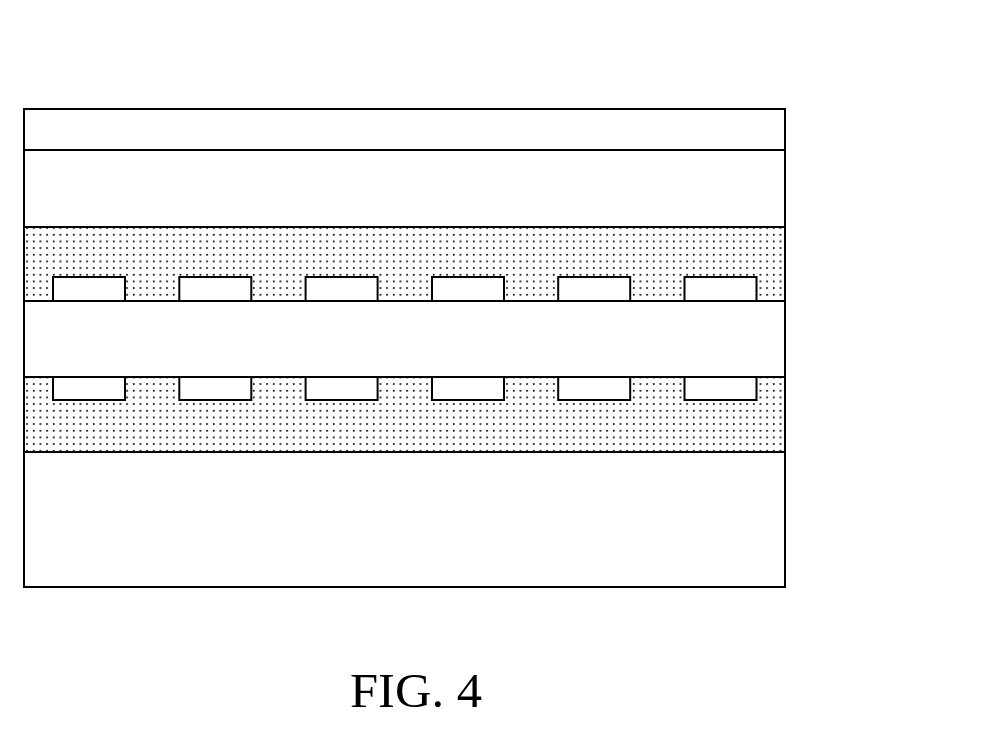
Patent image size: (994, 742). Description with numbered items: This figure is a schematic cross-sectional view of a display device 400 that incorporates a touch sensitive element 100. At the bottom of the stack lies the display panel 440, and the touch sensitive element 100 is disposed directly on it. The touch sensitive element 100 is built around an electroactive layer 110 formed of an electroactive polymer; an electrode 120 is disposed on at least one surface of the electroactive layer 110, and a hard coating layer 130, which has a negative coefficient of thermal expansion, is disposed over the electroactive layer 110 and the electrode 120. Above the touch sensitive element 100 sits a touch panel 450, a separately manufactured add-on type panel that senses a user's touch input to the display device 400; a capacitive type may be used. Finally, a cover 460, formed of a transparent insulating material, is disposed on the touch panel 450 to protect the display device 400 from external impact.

The display device 400 is at (763, 38).
The cover 460 is at (753, 133).
The touch panel 450 is at (753, 192).
The touch sensitive element 100 is at (870, 243).
The hard coating layer 130 is at (755, 250).
The electrode 120 is at (605, 285).
The electroactive layer 110 is at (755, 337).
The display panel 440 is at (753, 512).